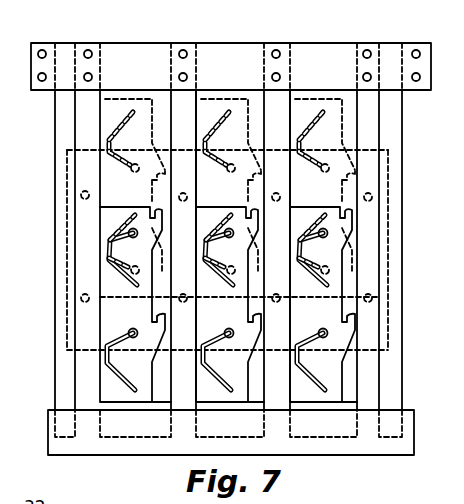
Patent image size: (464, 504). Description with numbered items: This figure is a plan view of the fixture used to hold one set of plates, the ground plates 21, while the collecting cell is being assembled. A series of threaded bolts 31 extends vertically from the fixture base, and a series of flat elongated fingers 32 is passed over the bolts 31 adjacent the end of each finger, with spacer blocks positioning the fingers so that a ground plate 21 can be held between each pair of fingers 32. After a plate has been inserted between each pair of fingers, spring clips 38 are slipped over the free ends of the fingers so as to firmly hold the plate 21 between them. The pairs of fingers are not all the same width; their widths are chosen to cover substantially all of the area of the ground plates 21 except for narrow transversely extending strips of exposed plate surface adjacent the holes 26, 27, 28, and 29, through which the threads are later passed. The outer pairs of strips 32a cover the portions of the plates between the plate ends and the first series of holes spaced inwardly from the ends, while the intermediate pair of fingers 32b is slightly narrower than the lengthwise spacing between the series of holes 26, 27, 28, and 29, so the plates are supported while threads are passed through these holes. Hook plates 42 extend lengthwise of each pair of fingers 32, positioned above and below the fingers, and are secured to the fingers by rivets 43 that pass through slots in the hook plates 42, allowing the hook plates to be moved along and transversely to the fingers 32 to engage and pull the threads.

The ground plates 21 is at (390, 165).
The series of holes 26 is at (80, 194).
The series of holes 27 is at (182, 192).
The series of holes 28 is at (277, 192).
The series of holes 29 is at (372, 196).
The threaded bolts 31 is at (273, 47).
The flat elongated fingers 32 is at (55, 138).
The outer pairs of strips 32a is at (55, 252).
The intermediate pair of fingers 32b is at (125, 437).
The spring clips 38 is at (414, 455).
The hook plates 42 is at (345, 126).
The rivets 43 is at (324, 175).